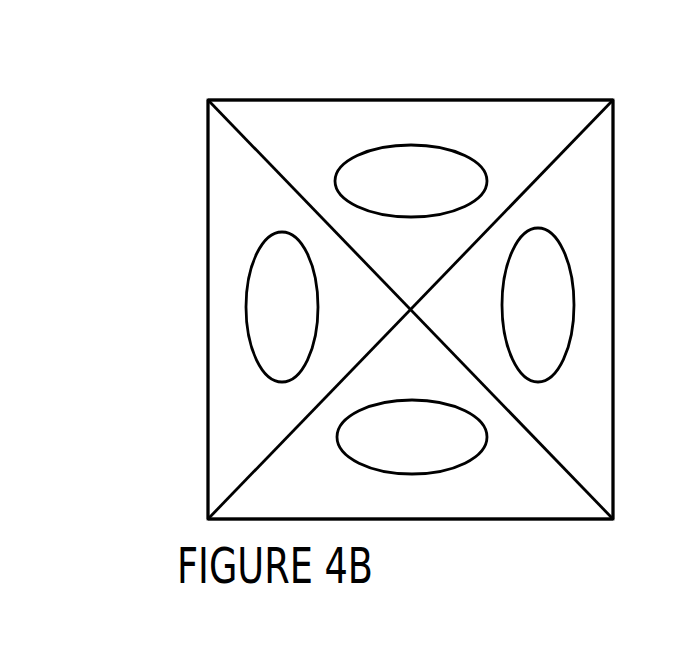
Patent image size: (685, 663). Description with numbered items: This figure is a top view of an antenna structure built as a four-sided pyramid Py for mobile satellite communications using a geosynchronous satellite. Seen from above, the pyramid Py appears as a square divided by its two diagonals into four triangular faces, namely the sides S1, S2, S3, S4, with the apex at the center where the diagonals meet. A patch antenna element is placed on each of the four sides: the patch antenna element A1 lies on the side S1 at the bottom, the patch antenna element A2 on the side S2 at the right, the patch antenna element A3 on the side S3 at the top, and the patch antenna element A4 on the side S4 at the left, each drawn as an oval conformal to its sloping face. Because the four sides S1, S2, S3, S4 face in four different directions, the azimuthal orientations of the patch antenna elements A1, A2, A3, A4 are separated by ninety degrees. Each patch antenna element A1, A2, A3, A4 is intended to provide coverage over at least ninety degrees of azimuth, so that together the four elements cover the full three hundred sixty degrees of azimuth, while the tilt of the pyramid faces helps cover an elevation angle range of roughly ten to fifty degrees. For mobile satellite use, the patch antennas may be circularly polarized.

The four-sided pyramid Py is at (166, 122).
The first side of pyramid S1 is at (522, 490).
The second side of pyramid S2 is at (590, 182).
The third side of pyramid S3 is at (360, 117).
The fourth side of pyramid S4 is at (232, 397).
The patch antenna element A1 is at (408, 450).
The patch antenna element A2 is at (555, 312).
The patch antenna element A3 is at (426, 165).
The patch antenna element A4 is at (278, 297).